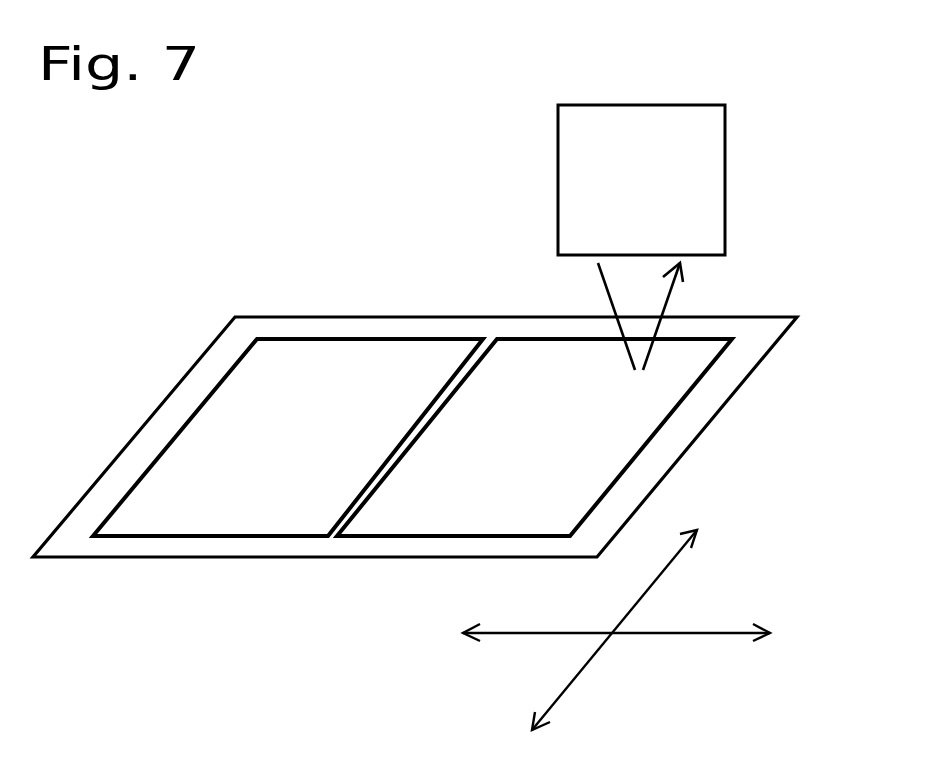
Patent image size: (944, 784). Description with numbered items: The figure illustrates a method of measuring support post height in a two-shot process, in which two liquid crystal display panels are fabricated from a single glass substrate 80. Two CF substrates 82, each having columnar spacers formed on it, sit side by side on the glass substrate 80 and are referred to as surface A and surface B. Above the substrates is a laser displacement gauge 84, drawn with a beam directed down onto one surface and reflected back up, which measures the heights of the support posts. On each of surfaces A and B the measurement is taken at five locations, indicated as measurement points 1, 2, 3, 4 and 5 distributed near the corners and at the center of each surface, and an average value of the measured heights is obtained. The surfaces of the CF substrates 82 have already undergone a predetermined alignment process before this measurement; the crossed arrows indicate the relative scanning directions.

The glass substrate 80 is at (742, 383).
The CF substrate 82 is at (195, 413).
The laser displacement gauge 84 is at (725, 152).
The measurement point 1 is at (528, 380).
The measurement point 2 is at (432, 505).
The measurement point 3 is at (392, 444).
The measurement point 4 is at (397, 370).
The measurement point 5 is at (282, 505).